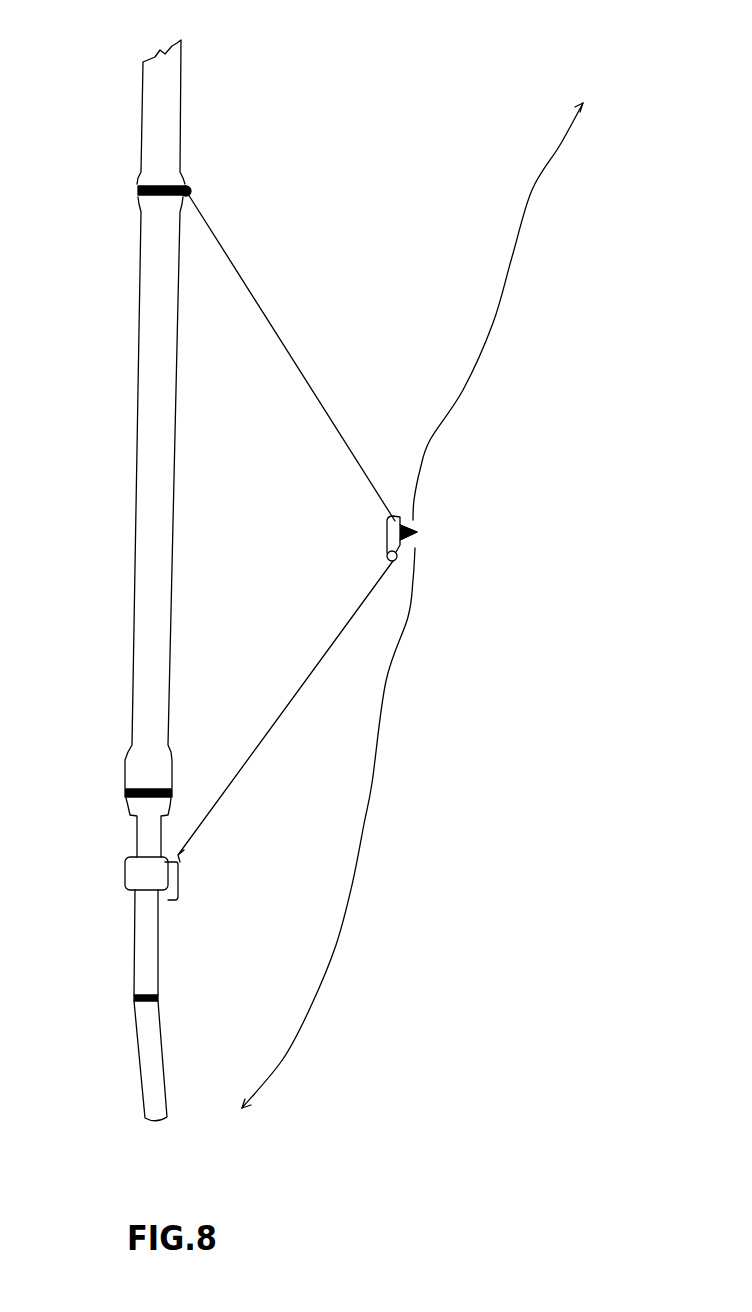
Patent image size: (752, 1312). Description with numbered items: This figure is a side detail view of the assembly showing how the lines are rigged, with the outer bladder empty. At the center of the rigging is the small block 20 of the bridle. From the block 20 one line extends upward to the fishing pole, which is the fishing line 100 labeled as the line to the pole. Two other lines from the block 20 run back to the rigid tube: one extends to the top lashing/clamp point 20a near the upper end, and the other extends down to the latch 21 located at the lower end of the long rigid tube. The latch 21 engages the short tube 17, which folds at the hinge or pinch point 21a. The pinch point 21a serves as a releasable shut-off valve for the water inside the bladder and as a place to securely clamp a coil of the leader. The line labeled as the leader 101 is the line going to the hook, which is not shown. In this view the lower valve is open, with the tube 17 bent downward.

The tube 17 is at (140, 1073).
The block 20 is at (387, 542).
The top lashing/clamp point 20a is at (192, 186).
The latch 21 is at (143, 893).
The hinge 21a is at (136, 1000).
The fishing line 100 is at (490, 322).
The leader 101 is at (374, 828).